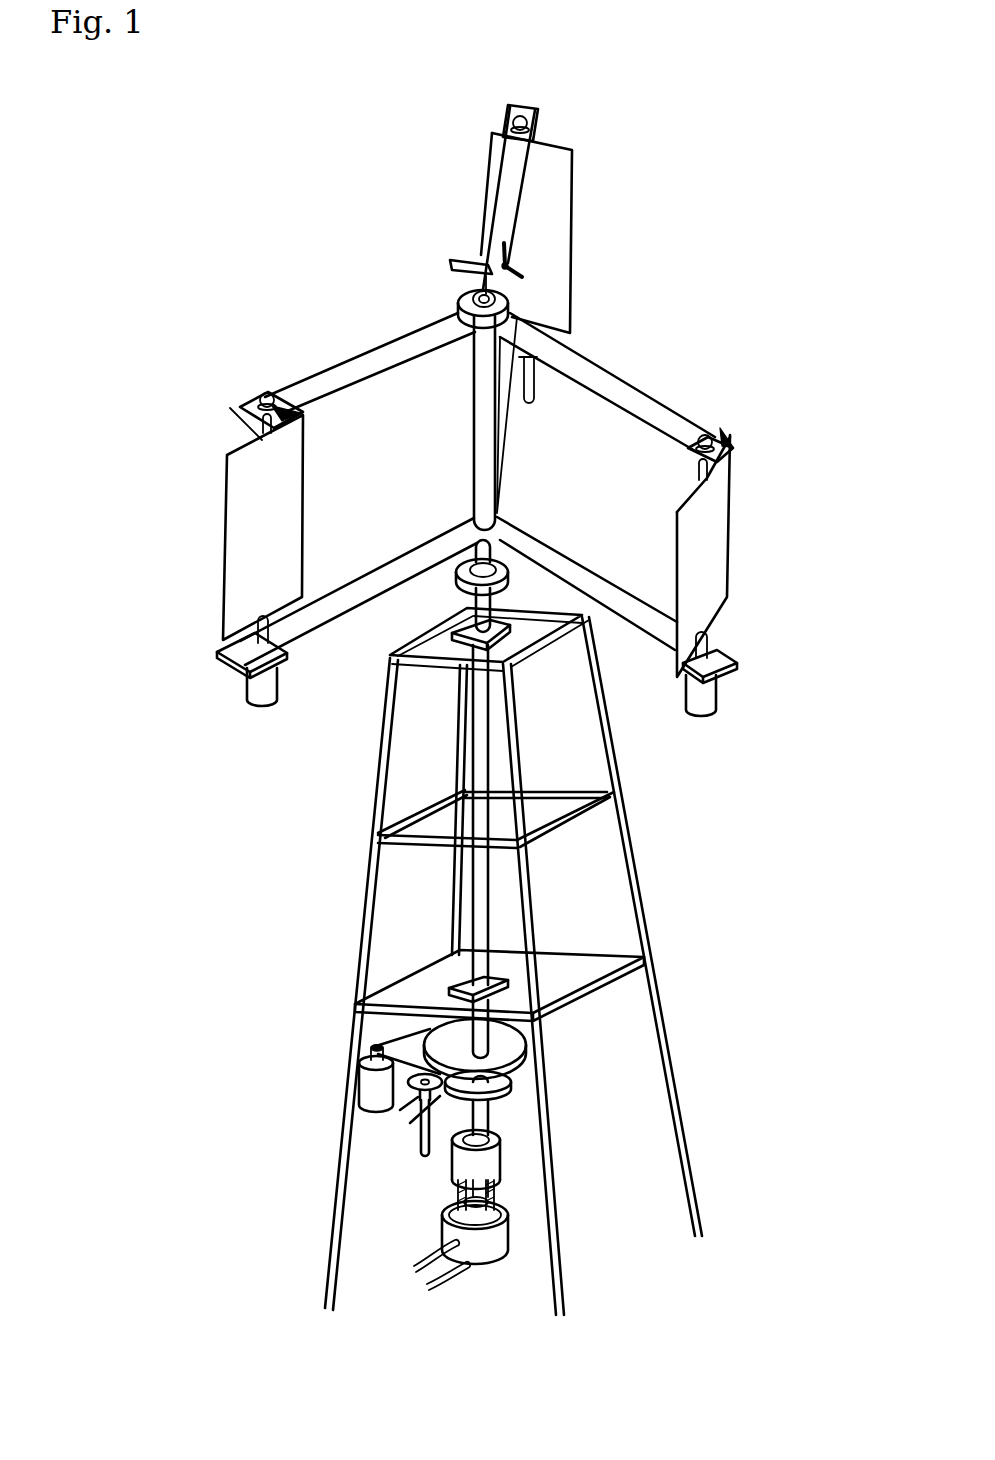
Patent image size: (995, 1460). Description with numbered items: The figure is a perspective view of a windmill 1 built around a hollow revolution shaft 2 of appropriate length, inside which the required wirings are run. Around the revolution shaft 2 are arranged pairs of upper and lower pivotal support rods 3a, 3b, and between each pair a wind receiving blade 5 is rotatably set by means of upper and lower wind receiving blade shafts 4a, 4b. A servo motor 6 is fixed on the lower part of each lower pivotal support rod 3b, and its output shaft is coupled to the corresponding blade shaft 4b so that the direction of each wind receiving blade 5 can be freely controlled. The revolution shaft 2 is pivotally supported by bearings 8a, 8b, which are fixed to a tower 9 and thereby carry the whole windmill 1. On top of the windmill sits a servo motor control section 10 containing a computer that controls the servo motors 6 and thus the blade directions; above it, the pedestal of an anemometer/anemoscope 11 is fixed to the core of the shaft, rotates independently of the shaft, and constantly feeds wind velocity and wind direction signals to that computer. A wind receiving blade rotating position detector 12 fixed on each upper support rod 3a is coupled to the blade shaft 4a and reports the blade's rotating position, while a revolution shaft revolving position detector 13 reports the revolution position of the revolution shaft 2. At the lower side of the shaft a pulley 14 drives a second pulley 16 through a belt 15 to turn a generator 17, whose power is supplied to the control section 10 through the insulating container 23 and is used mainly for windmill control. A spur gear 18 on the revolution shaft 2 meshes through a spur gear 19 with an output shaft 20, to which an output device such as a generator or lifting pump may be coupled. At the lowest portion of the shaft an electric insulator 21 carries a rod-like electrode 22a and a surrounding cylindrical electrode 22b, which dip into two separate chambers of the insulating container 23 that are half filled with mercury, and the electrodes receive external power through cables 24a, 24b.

The windmill 1 is at (329, 328).
The revolution shaft 2 is at (472, 446).
The upper pivotal support rod 3a is at (623, 378).
The lower pivotal support rod 3b is at (563, 565).
The wind receiving blade shaft 4a is at (257, 426).
The wind receiving blade shaft 4b is at (252, 630).
The wind receiving blade 5 is at (562, 242).
The servo motor 6 is at (249, 690).
The bearing 8a is at (505, 637).
The bearing 8b is at (455, 982).
The tower 9 is at (628, 860).
The servo motor control section 10 is at (460, 303).
The anemometer/anemoscope 11 is at (450, 262).
The wind receiving blade rotating position detector 12 is at (513, 120).
The revolution shaft revolving position detector 13 is at (455, 578).
The pulley 14 is at (516, 1045).
The belt 15 is at (400, 1050).
The pulley 16 is at (376, 1048).
The generator 17 is at (366, 1090).
The spur gear 18 is at (511, 1082).
The spur gear 19 is at (415, 1092).
The output shaft 20 is at (418, 1140).
The electric insulator 21 is at (502, 1138).
The rod-like electrode 22a is at (500, 1185).
The cylindrical electrode 22b is at (452, 1160).
The insulating container 23 is at (505, 1235).
The cable 24a is at (455, 1273).
The cable 24b is at (442, 1248).